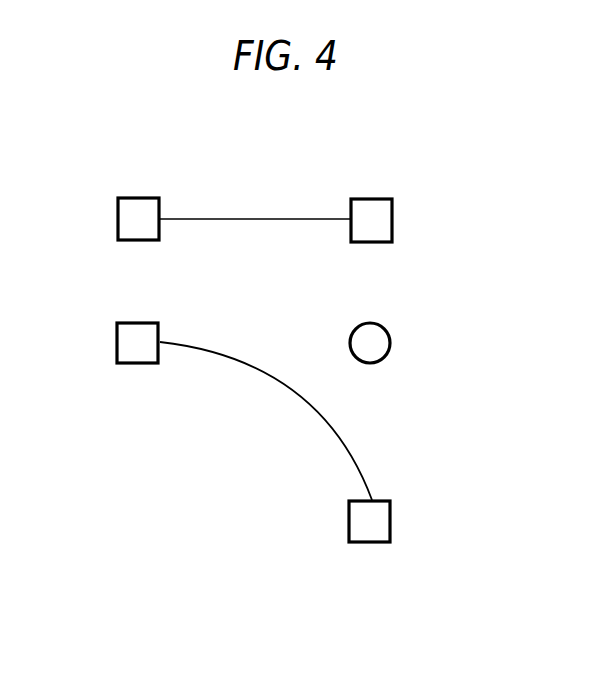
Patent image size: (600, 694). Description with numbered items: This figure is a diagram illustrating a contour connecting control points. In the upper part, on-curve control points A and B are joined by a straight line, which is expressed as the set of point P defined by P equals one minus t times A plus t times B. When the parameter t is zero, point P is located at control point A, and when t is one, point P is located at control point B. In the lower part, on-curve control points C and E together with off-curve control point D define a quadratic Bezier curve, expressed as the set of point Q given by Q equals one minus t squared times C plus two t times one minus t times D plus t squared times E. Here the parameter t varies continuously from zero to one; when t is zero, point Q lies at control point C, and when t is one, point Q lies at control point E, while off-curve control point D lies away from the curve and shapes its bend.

The control point A is at (117, 222).
The control point B is at (393, 222).
The point P is at (268, 220).
The control point C is at (116, 345).
The control point D is at (391, 343).
The control point E is at (391, 520).
The point Q is at (292, 394).